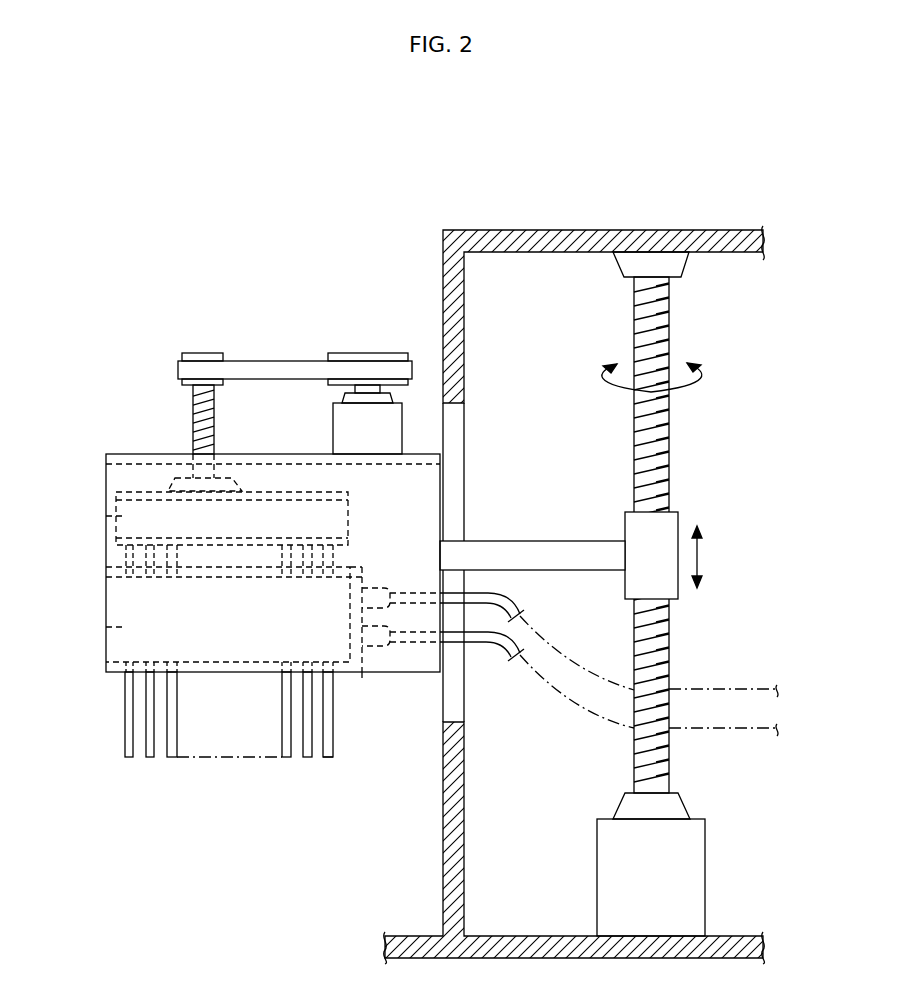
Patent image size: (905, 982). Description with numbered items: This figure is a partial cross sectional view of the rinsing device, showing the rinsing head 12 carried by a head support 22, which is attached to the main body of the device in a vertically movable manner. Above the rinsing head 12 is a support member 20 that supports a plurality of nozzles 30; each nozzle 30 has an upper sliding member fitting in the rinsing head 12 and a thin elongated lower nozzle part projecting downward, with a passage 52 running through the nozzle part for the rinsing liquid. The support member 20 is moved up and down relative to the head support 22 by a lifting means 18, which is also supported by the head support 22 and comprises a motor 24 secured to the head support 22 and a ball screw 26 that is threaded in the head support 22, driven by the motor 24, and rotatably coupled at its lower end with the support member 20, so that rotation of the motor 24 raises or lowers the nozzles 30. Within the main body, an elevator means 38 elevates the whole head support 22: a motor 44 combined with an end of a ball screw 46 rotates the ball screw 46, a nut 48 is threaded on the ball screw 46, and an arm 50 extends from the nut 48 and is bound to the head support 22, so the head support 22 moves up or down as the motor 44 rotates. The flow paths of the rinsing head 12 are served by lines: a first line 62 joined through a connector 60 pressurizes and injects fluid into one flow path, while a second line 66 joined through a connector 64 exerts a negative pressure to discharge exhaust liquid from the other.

The rinsing head 12 is at (125, 627).
The lifting means 18 is at (351, 270).
The support member 20 is at (106, 516).
The head support 22 is at (128, 452).
The motor 24 is at (342, 437).
The ball screw 26 is at (192, 418).
The nozzle 30 is at (333, 735).
The elevator means 38 is at (749, 620).
The motor 44 is at (688, 875).
The ball screw 46 is at (673, 419).
The nut 48 is at (663, 530).
The arm 50 is at (540, 541).
The passage 52 is at (330, 757).
The connector 60 is at (367, 672).
The first line 62 is at (498, 652).
The connector 64 is at (372, 583).
The second line 66 is at (508, 596).